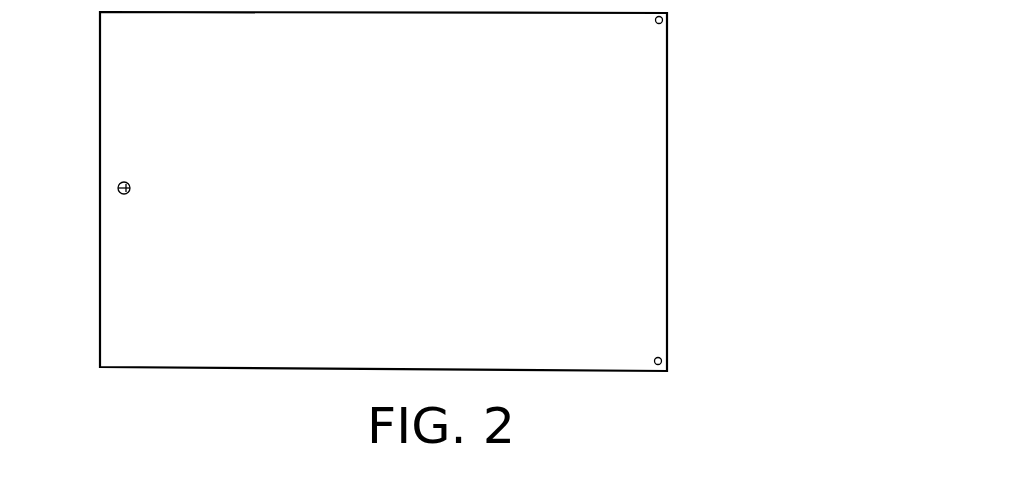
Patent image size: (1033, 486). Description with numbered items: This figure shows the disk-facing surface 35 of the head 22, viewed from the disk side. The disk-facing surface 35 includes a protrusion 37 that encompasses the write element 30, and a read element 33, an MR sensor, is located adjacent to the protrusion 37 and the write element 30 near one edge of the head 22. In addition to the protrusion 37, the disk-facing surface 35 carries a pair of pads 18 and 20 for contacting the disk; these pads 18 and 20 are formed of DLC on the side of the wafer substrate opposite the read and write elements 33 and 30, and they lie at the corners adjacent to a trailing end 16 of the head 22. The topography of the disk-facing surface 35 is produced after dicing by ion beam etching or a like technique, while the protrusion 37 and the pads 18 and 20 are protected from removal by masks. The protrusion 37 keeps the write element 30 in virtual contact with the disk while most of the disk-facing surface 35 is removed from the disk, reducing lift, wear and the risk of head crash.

The trailing end 16 is at (668, 185).
The pad 18 is at (664, 18).
The pad 20 is at (663, 359).
The head 22 is at (806, 28).
The write element 30 is at (129, 183).
The read element 33 is at (112, 191).
The disk-facing surface 35 is at (415, 219).
The protrusion 37 is at (129, 194).